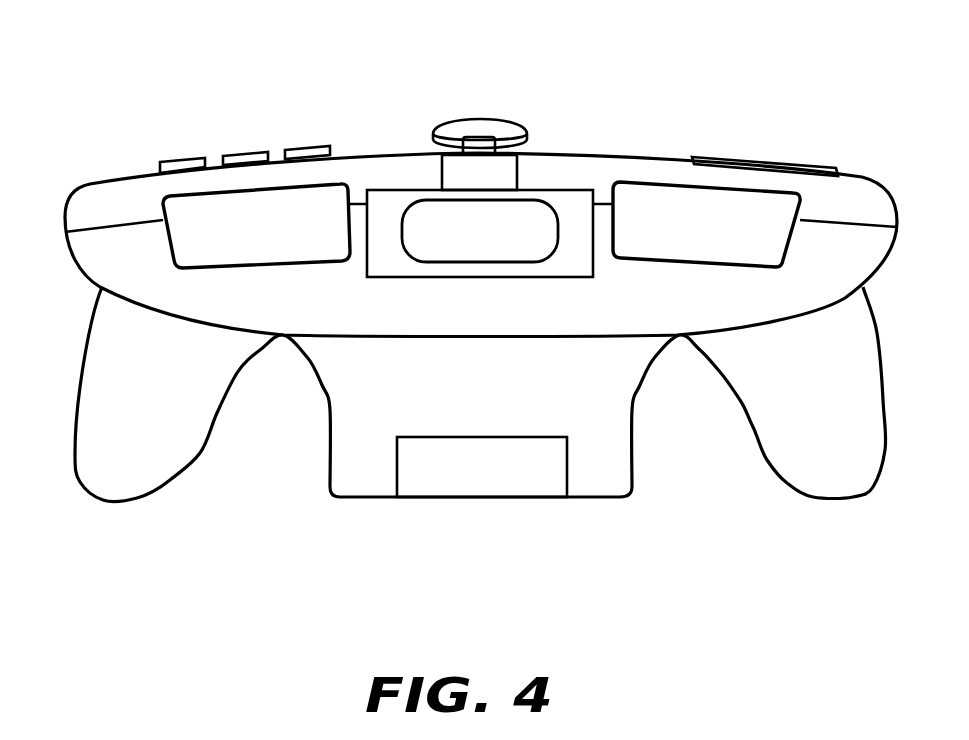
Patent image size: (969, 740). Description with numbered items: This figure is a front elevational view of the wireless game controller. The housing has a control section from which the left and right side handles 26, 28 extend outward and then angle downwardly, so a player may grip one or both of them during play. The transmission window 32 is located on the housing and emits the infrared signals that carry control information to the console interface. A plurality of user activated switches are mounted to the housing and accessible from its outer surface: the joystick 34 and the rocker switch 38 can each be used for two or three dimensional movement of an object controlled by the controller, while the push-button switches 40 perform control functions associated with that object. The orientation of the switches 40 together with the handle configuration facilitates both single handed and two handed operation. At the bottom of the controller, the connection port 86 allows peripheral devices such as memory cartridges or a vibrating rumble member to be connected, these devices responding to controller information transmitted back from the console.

The left side handle 26 is at (823, 492).
The right side handle 28 is at (127, 492).
The transmission window 32 is at (462, 253).
The joystick 34 is at (477, 118).
The rocker switch 38 is at (752, 160).
The push-button switches 40 is at (300, 148).
The connection port 86 is at (473, 492).